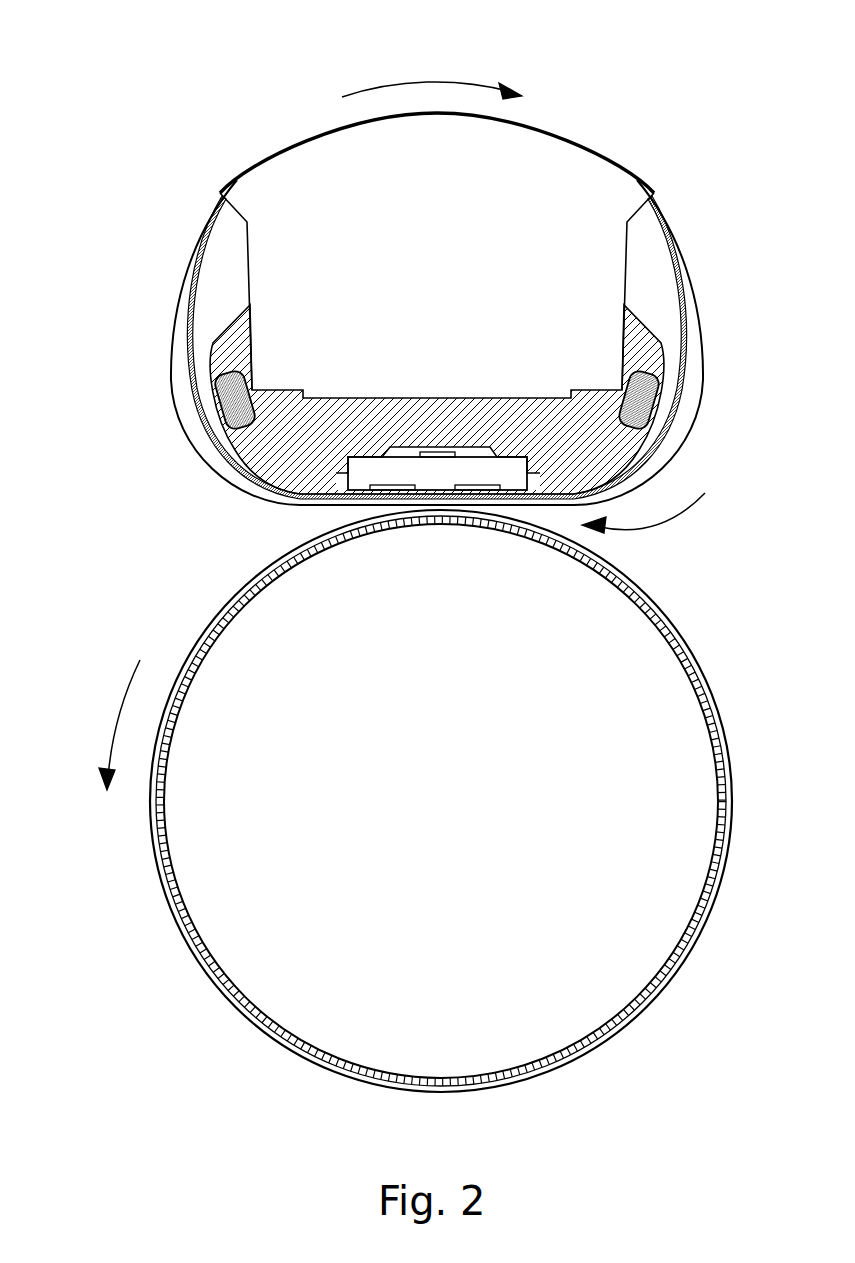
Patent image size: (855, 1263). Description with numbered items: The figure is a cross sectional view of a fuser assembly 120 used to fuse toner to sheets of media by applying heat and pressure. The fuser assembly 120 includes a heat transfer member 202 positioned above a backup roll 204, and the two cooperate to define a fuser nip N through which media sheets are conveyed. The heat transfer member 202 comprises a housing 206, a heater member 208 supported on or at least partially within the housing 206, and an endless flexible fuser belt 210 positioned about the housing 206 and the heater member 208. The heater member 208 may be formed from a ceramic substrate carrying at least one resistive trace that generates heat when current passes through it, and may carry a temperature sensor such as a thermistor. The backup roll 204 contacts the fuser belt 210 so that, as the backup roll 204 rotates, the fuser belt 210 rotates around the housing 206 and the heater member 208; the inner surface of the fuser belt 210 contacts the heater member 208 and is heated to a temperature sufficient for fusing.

The fuser assembly 120 is at (190, 28).
The heat transfer member 202 is at (155, 302).
The backup roll 204 is at (183, 593).
The housing 206 is at (552, 423).
The heater member 208 is at (385, 468).
The fuser belt 210 is at (284, 148).
The fuser nip N is at (654, 510).